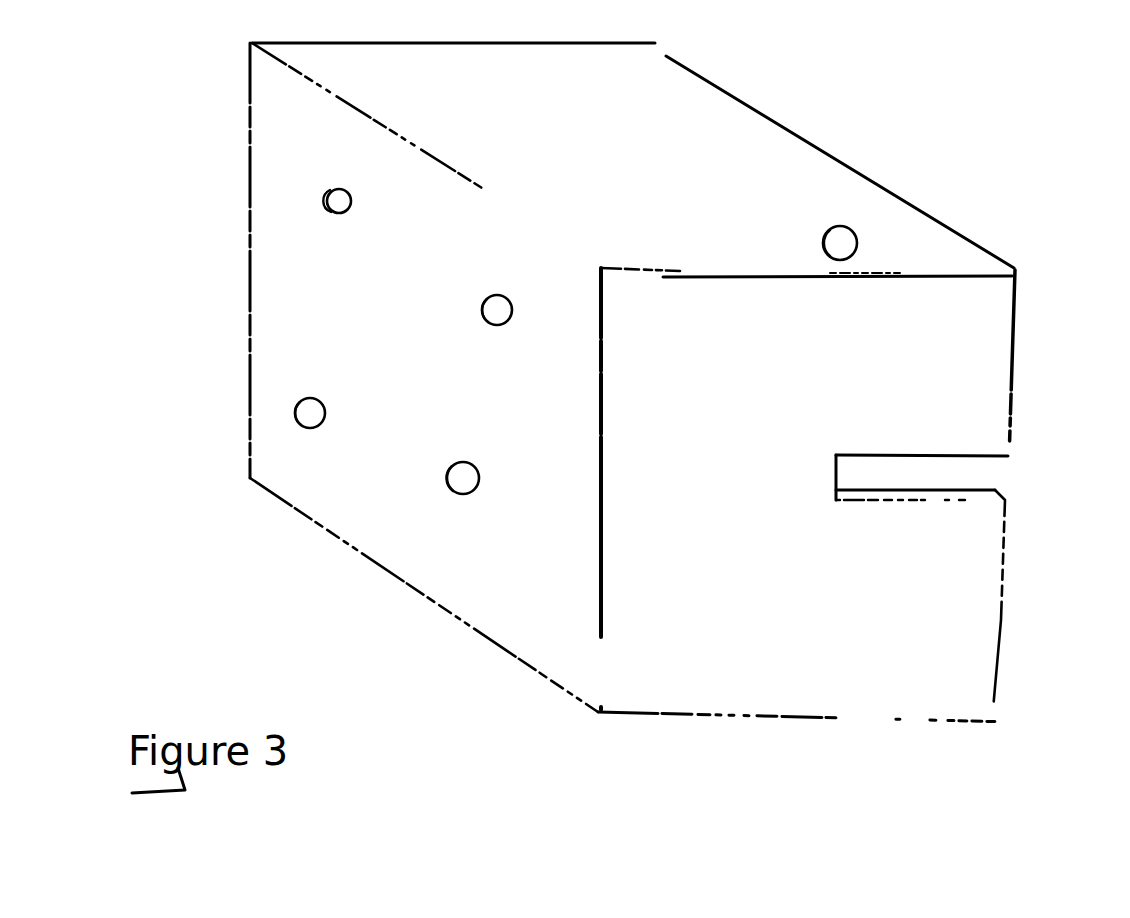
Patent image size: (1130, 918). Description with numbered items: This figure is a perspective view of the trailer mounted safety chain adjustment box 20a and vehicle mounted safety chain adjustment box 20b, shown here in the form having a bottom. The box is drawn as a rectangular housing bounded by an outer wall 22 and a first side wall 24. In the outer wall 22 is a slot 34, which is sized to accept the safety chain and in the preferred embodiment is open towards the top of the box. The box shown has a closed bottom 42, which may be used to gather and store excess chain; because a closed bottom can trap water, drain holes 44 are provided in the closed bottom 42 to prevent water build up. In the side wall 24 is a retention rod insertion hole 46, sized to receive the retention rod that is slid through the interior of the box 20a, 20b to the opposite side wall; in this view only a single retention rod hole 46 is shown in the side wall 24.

The trailer mounted safety chain adjustment box 20a is at (843, 768).
The vehicle mounted safety chain adjustment box 20b is at (806, 575).
The outer wall 22 is at (932, 565).
The first side wall 24 is at (752, 140).
The slot 34 is at (1000, 476).
The closed bottom 42 is at (290, 282).
The drain holes 44 is at (334, 187).
The retention rod insertion holes 46 is at (846, 246).